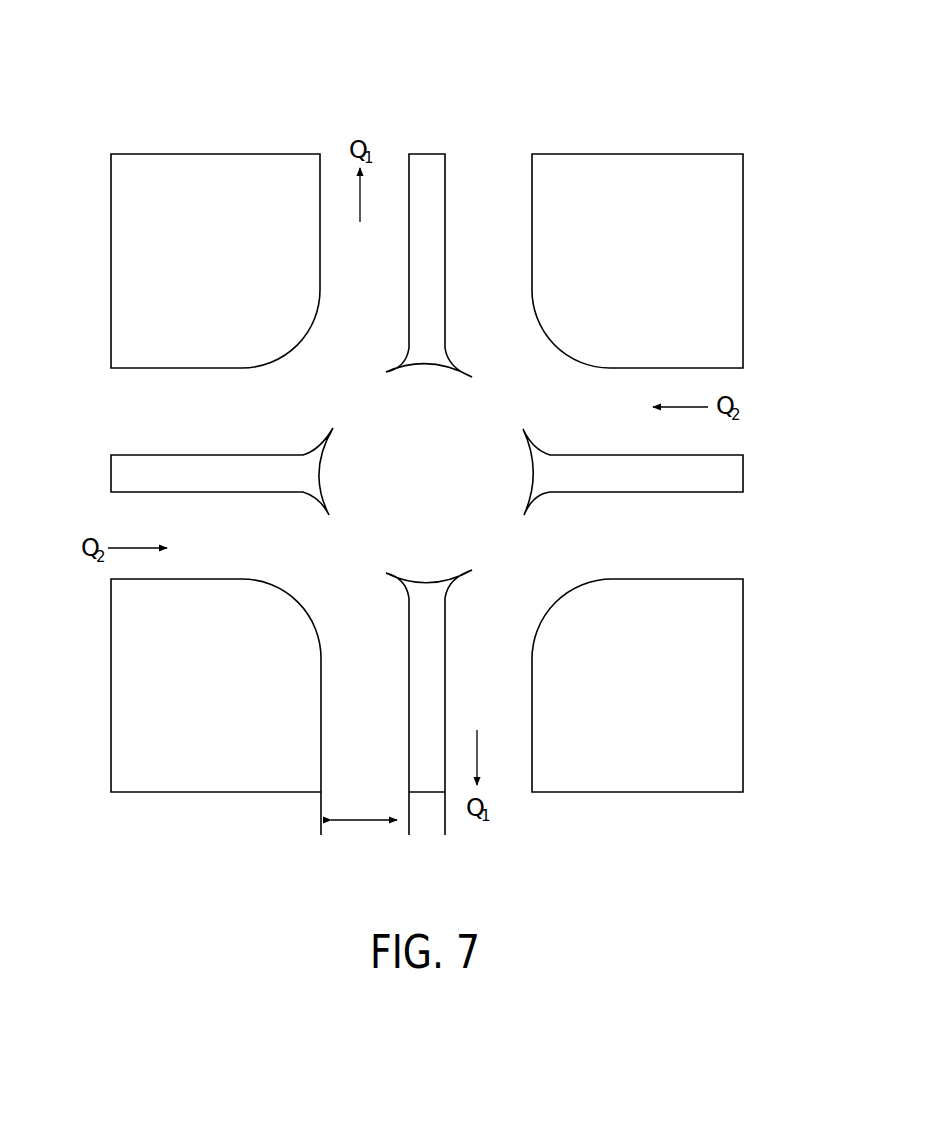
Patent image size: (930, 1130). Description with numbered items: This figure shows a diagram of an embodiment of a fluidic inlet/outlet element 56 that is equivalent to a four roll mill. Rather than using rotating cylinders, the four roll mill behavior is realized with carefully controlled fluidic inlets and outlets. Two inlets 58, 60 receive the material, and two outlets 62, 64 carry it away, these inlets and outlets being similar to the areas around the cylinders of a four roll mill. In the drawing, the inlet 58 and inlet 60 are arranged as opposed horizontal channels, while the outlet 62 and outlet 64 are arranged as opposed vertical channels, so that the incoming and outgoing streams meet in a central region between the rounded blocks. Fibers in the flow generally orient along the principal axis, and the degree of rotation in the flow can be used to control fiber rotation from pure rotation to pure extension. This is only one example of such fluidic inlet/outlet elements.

The flow distribution device 56 is at (449, 428).
The inlet 58 is at (727, 382).
The inlet 60 is at (117, 517).
The outlet 62 is at (402, 153).
The outlet 64 is at (507, 793).